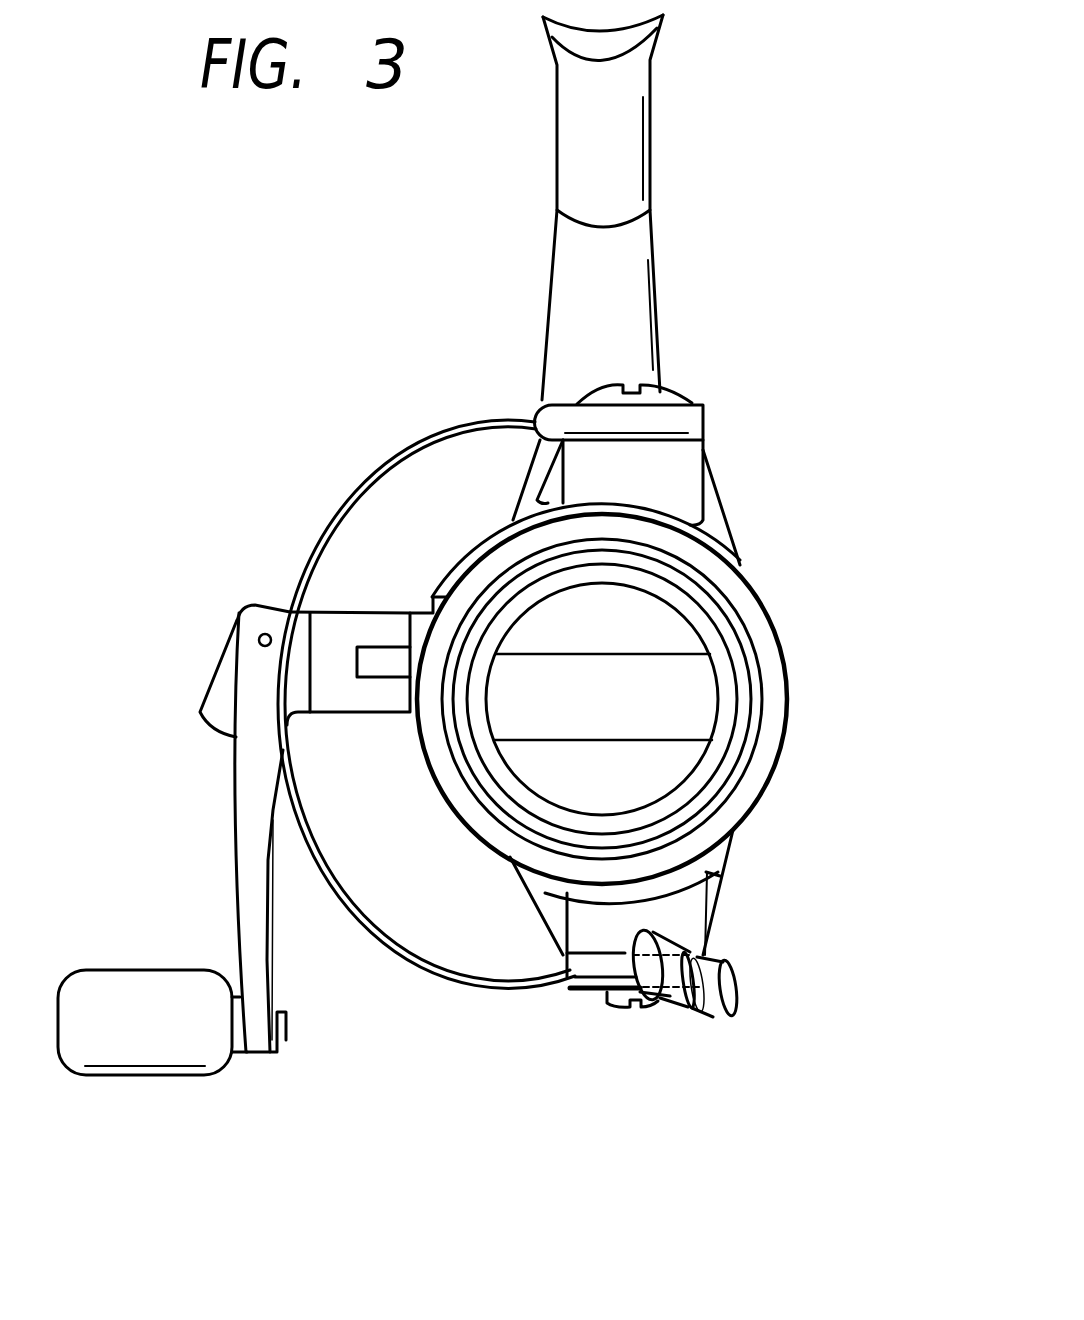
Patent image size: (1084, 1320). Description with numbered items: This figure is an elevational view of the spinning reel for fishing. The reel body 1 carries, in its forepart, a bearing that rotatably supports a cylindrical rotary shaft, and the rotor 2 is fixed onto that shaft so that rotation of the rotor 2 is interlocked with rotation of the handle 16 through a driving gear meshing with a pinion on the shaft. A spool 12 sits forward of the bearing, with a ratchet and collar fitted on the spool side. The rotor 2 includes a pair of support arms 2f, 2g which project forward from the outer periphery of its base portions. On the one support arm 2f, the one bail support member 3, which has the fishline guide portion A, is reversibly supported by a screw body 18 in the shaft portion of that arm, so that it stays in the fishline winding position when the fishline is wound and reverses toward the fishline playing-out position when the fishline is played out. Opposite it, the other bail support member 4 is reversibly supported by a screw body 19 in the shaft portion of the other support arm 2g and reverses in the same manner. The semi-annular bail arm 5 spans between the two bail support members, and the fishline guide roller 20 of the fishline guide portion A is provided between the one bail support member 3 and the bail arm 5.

The reel body 1 is at (668, 277).
The screw body 19 is at (657, 380).
The other bail support member 4 is at (695, 412).
The other support arm 2g is at (690, 453).
The rotor 2 is at (720, 495).
The spool 12 is at (778, 691).
The semi-annular bail arm 5 is at (357, 487).
The handle 16 is at (250, 887).
The one support arm 2f is at (694, 908).
The one bail support member 3 is at (577, 990).
The screw body 18 is at (628, 995).
The fishline guide roller 20 is at (722, 962).
The fishline guide portion A is at (679, 1004).